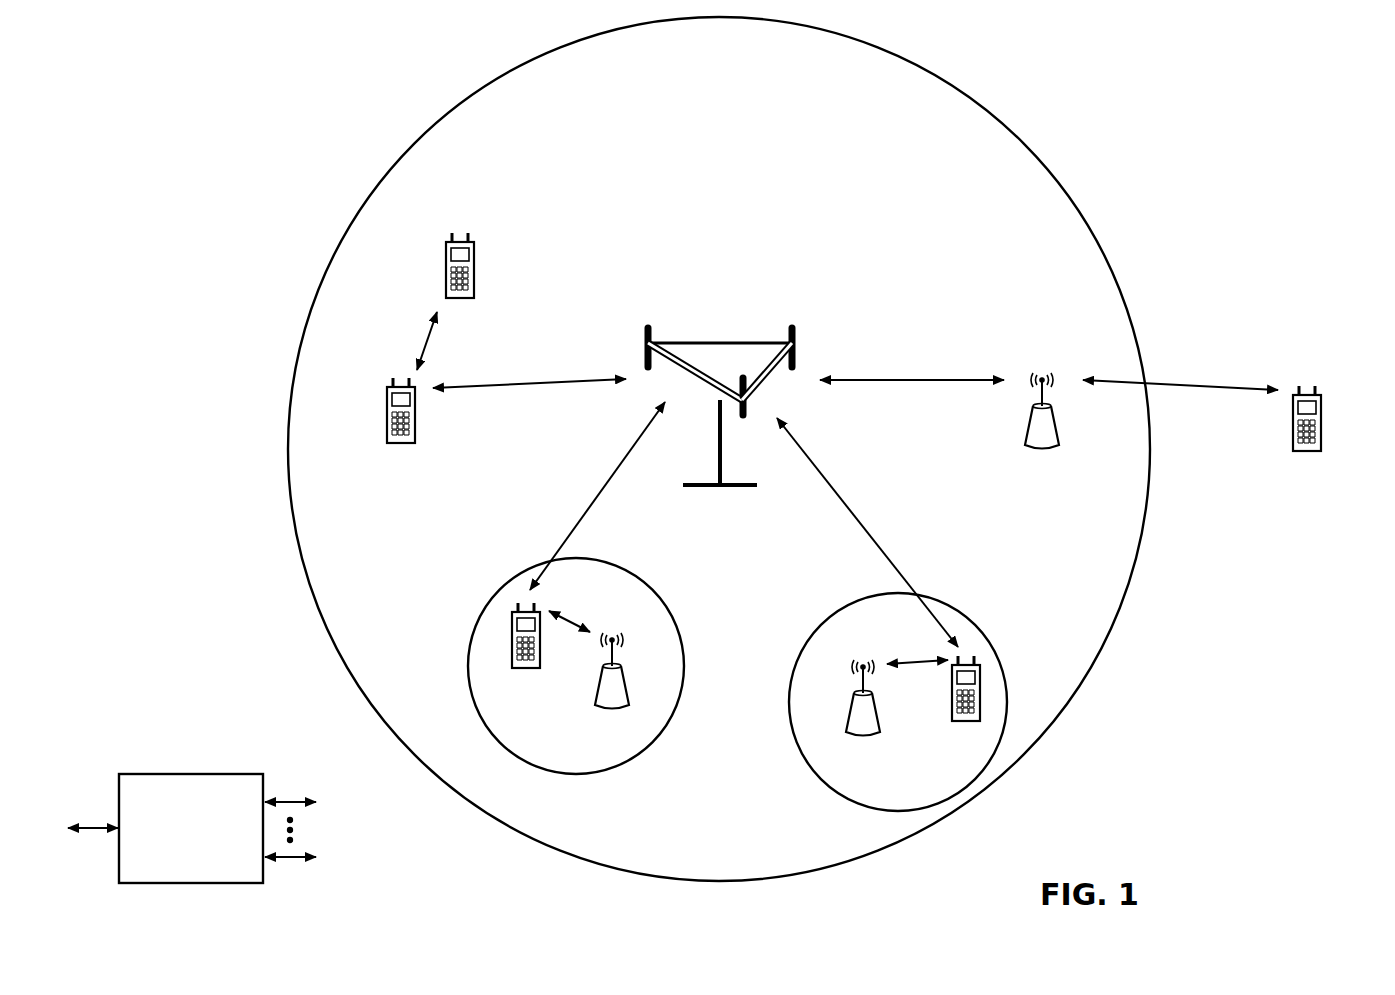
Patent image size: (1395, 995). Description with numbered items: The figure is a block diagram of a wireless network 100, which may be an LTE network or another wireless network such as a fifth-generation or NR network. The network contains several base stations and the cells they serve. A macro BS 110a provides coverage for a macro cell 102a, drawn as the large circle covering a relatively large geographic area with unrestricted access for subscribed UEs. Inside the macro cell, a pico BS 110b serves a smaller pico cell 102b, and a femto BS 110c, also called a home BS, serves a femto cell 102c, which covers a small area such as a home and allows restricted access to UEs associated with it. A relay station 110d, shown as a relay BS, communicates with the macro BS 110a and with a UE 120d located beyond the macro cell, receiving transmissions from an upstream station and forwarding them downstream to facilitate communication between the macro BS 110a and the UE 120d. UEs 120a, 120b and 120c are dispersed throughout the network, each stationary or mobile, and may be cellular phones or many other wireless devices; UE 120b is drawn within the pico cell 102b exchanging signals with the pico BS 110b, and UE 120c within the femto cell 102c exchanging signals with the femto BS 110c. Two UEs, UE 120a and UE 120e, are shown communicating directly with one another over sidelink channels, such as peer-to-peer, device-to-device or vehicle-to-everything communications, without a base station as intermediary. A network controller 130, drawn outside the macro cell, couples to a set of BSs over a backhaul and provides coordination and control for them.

The wireless network 100 is at (1214, 98).
The macro cell 102a is at (1018, 112).
The pico cell 102b is at (667, 579).
The femto cell 102c is at (816, 629).
The macro BS 110a is at (735, 329).
The pico BS 110b is at (644, 681).
The femto BS 110c is at (848, 722).
The relay station 110d is at (1051, 357).
The UE 120a is at (387, 400).
The UE 120b is at (512, 663).
The UE 120c is at (952, 716).
The UE 120d is at (1338, 396).
The UE 120e is at (445, 257).
The network controller 130 is at (198, 760).